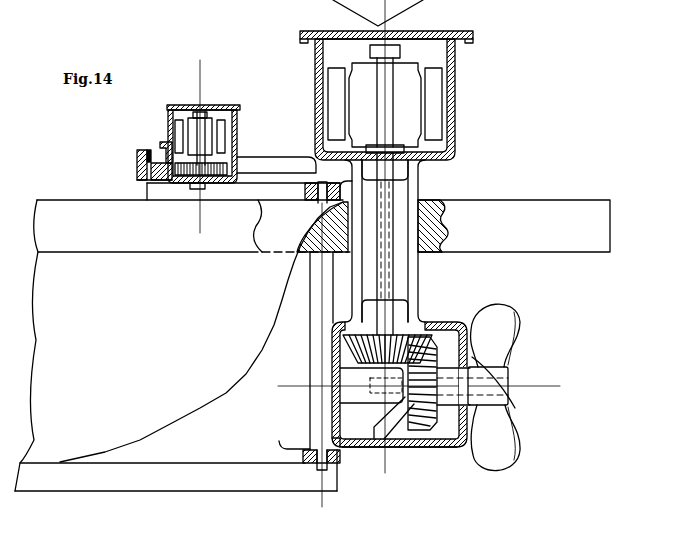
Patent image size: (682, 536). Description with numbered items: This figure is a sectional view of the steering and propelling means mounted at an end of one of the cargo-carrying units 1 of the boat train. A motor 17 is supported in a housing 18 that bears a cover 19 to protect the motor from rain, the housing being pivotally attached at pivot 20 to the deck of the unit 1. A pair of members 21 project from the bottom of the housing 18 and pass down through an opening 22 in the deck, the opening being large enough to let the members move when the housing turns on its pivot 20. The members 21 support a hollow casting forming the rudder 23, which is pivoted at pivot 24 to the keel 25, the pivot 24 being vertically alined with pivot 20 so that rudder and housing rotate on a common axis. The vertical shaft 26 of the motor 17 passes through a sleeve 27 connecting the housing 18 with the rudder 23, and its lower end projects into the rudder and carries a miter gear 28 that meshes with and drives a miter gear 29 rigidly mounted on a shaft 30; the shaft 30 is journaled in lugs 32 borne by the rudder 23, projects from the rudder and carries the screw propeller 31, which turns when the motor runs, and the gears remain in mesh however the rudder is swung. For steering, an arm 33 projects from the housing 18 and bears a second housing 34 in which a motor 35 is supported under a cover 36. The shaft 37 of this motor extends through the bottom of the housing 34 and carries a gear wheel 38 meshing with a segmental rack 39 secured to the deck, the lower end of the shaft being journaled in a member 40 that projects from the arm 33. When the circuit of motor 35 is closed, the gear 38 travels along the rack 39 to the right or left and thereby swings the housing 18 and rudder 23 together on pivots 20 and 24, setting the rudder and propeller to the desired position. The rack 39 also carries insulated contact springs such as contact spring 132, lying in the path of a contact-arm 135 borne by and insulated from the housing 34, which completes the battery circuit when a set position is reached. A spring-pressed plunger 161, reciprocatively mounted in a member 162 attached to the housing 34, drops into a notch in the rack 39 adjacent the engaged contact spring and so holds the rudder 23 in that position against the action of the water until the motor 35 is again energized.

The cargo-carrying unit 1 is at (312, 345).
The motor 17 is at (405, 90).
The housing 18 is at (457, 115).
The cover 19 is at (437, 31).
The pivot 20 is at (318, 203).
The members 21 is at (418, 285).
The opening 22 is at (432, 200).
The rudder 23 is at (441, 446).
The pivot 24 is at (319, 466).
The keel 25 is at (337, 491).
The shaft 26 is at (385, 108).
The sleeve 27 is at (390, 285).
The miter gear 28 is at (333, 350).
The miter gear 29 is at (423, 425).
The shaft 30 is at (392, 414).
The screw propeller 31 is at (512, 347).
The lugs 32 is at (364, 403).
The arm 33 is at (288, 173).
The housing 34 is at (168, 128).
The motor 35 is at (180, 118).
The cover 36 is at (212, 106).
The shaft 37 is at (202, 133).
The gear wheel 38 is at (182, 178).
The segmental rack 39 is at (153, 182).
The member 40 is at (213, 184).
The contact spring 132 is at (150, 172).
The contact-arm 135 is at (137, 155).
The plunger 161 is at (148, 158).
The member 162 is at (160, 143).